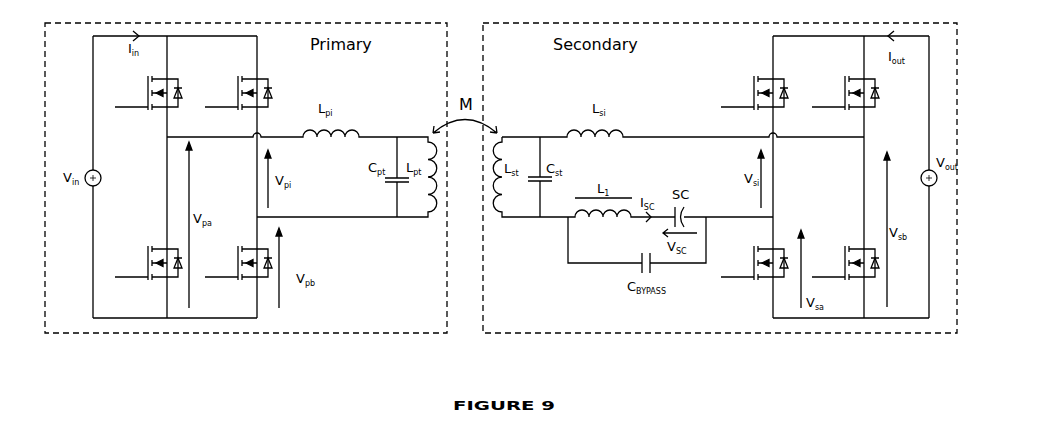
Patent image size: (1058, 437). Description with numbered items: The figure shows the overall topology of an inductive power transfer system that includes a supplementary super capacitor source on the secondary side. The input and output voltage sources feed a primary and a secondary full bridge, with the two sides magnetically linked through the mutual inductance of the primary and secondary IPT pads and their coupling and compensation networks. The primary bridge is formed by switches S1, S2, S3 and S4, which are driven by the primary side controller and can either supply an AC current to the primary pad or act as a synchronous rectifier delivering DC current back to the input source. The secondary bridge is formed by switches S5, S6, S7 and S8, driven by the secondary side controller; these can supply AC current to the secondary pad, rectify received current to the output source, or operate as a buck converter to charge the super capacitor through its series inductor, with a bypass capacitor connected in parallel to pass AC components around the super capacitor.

The primary bridge switch S1 is at (148, 93).
The primary bridge switch S2 is at (238, 93).
The primary bridge switch S3 is at (148, 263).
The primary bridge switch S4 is at (238, 263).
The secondary bridge switch S5 is at (754, 93).
The secondary bridge switch S6 is at (845, 93).
The secondary bridge switch S7 is at (754, 263).
The secondary bridge switch S8 is at (845, 263).